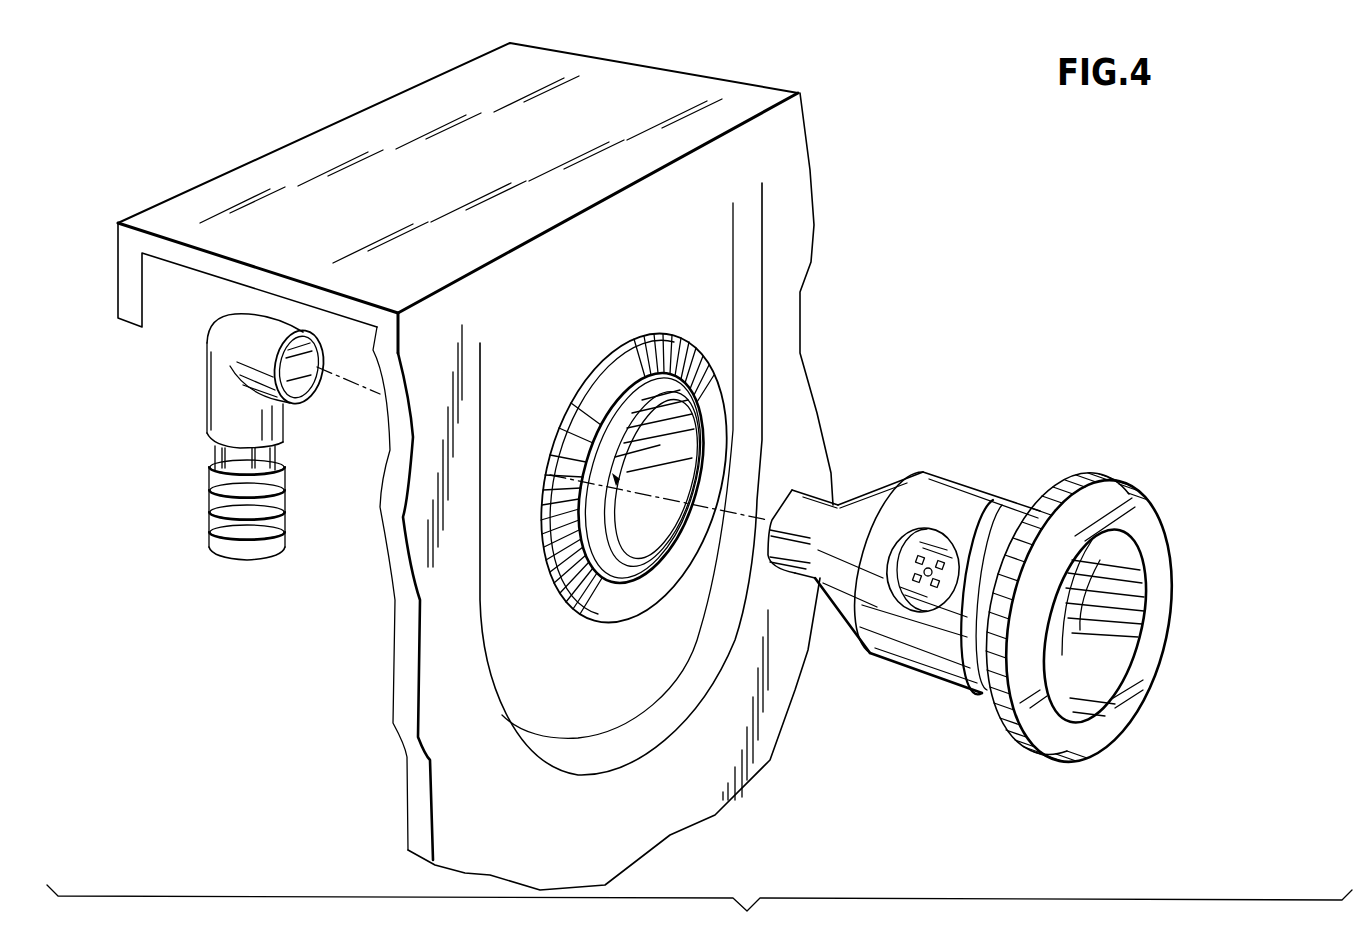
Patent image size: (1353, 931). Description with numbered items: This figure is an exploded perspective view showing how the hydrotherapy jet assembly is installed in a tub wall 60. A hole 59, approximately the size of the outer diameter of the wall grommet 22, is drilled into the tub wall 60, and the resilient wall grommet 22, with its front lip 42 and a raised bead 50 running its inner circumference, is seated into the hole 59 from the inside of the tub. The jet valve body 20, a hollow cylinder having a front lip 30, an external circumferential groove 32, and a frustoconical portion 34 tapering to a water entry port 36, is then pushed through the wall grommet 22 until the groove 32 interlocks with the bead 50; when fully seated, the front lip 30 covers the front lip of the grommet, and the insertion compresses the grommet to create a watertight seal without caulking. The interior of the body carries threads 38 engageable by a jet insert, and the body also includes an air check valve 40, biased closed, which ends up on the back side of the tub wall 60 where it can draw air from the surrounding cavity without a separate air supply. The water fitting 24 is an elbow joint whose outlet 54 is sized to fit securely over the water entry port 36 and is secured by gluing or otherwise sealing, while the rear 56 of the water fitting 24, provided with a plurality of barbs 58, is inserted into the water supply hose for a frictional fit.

The jet valve body 20 is at (1052, 418).
The wall grommet 22 is at (605, 353).
The water fitting 24 is at (190, 344).
The front lip 30 is at (1152, 507).
The external circumferential groove 32 is at (1040, 510).
The frustoconical portion 34 is at (878, 497).
The water entry port 36 is at (803, 494).
The threads 38 is at (1095, 578).
The air check valve 40 is at (933, 538).
The front lip 42 is at (657, 340).
The raised bead 50 is at (690, 412).
The outlet 54 is at (297, 378).
The rear 56 is at (248, 561).
The barbs 58 is at (285, 540).
The hole 59 is at (556, 577).
The tub wall 60 is at (800, 163).